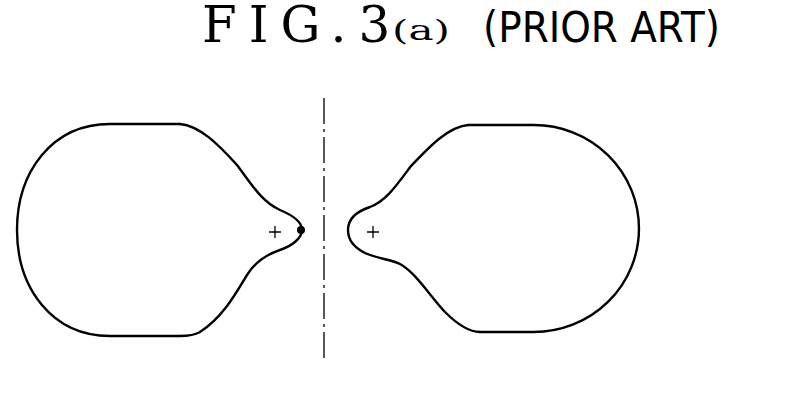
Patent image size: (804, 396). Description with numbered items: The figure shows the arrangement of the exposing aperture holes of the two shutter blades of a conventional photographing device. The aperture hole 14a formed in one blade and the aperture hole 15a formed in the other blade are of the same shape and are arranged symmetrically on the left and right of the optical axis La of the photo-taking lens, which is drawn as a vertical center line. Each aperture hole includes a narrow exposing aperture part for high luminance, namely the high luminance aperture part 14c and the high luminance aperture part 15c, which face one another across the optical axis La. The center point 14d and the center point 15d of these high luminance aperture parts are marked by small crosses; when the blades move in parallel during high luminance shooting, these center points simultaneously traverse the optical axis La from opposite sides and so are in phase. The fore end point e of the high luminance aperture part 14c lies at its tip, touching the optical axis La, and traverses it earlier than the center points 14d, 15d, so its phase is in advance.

The exposing aperture hole 14a is at (96, 124).
The exposing aperture part for high luminance 14c is at (297, 246).
The center point 14d is at (270, 228).
The exposing aperture hole 15a is at (571, 125).
The exposing aperture part for high luminance 15c is at (352, 246).
The center point 15d is at (378, 229).
The fore end point e is at (301, 229).
The optical axis La is at (324, 158).